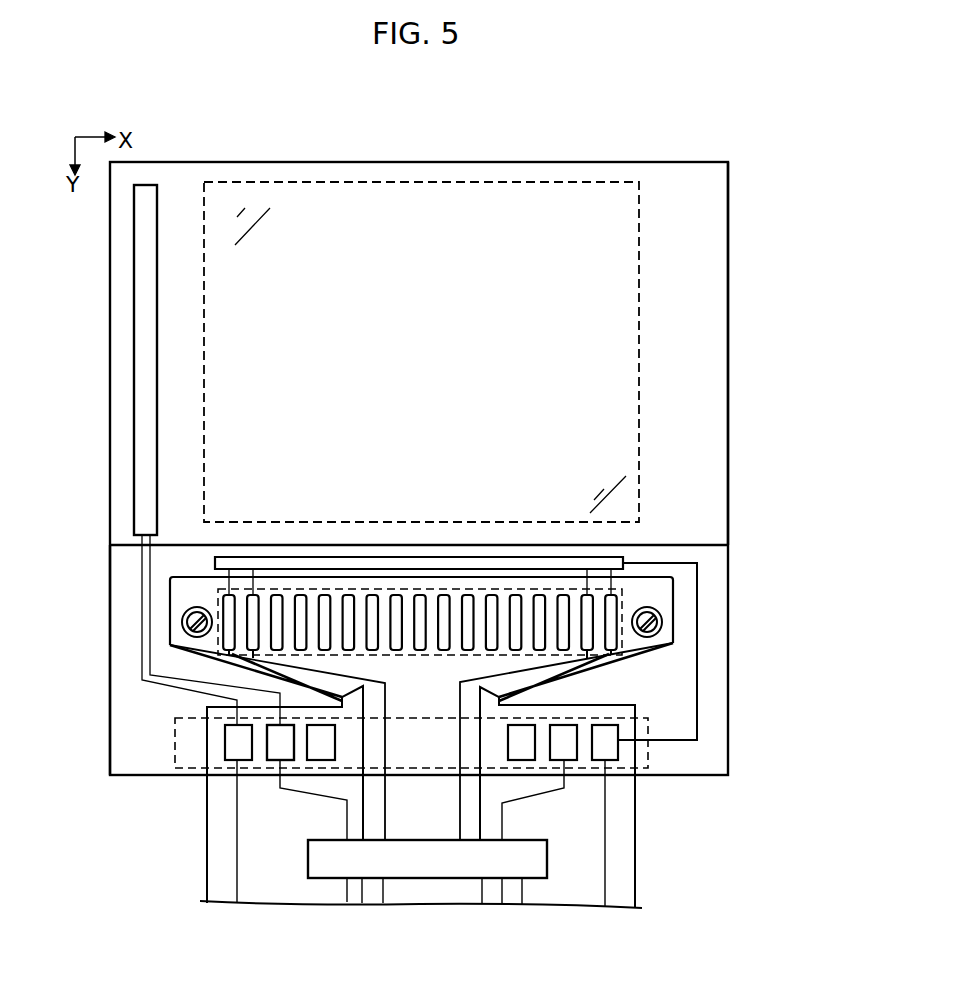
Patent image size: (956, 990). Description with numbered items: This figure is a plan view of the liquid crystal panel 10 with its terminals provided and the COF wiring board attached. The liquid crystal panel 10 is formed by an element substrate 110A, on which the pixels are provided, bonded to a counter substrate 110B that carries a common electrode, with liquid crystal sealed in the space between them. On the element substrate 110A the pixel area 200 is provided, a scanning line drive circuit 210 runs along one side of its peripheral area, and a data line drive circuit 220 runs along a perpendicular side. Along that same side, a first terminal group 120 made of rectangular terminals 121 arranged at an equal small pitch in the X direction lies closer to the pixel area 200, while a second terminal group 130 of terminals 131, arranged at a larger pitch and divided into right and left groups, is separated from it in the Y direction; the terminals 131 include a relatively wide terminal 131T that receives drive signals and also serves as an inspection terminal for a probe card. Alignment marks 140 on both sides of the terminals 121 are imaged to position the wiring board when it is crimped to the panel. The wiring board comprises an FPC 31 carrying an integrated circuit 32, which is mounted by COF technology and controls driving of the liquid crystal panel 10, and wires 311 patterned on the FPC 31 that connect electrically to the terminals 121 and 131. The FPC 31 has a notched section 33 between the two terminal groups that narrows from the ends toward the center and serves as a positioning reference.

The liquid crystal panel 10 is at (258, 150).
The element substrate 110A is at (120, 668).
The counter substrate 110B is at (706, 260).
The pixel area 200 is at (637, 318).
The scanning line drive circuit 210 is at (140, 355).
The data line drive circuit 220 is at (625, 560).
The first terminal group 120 is at (393, 655).
The terminals 121 is at (442, 648).
The alignment marks 140 is at (188, 607).
The notched section 33 is at (300, 690).
The second terminal group 130 is at (397, 775).
The terminals 131 is at (232, 742).
The terminal 131T is at (278, 752).
The FPC 31 is at (622, 850).
The integrated circuit 32 is at (535, 868).
The wires 311 is at (235, 890).